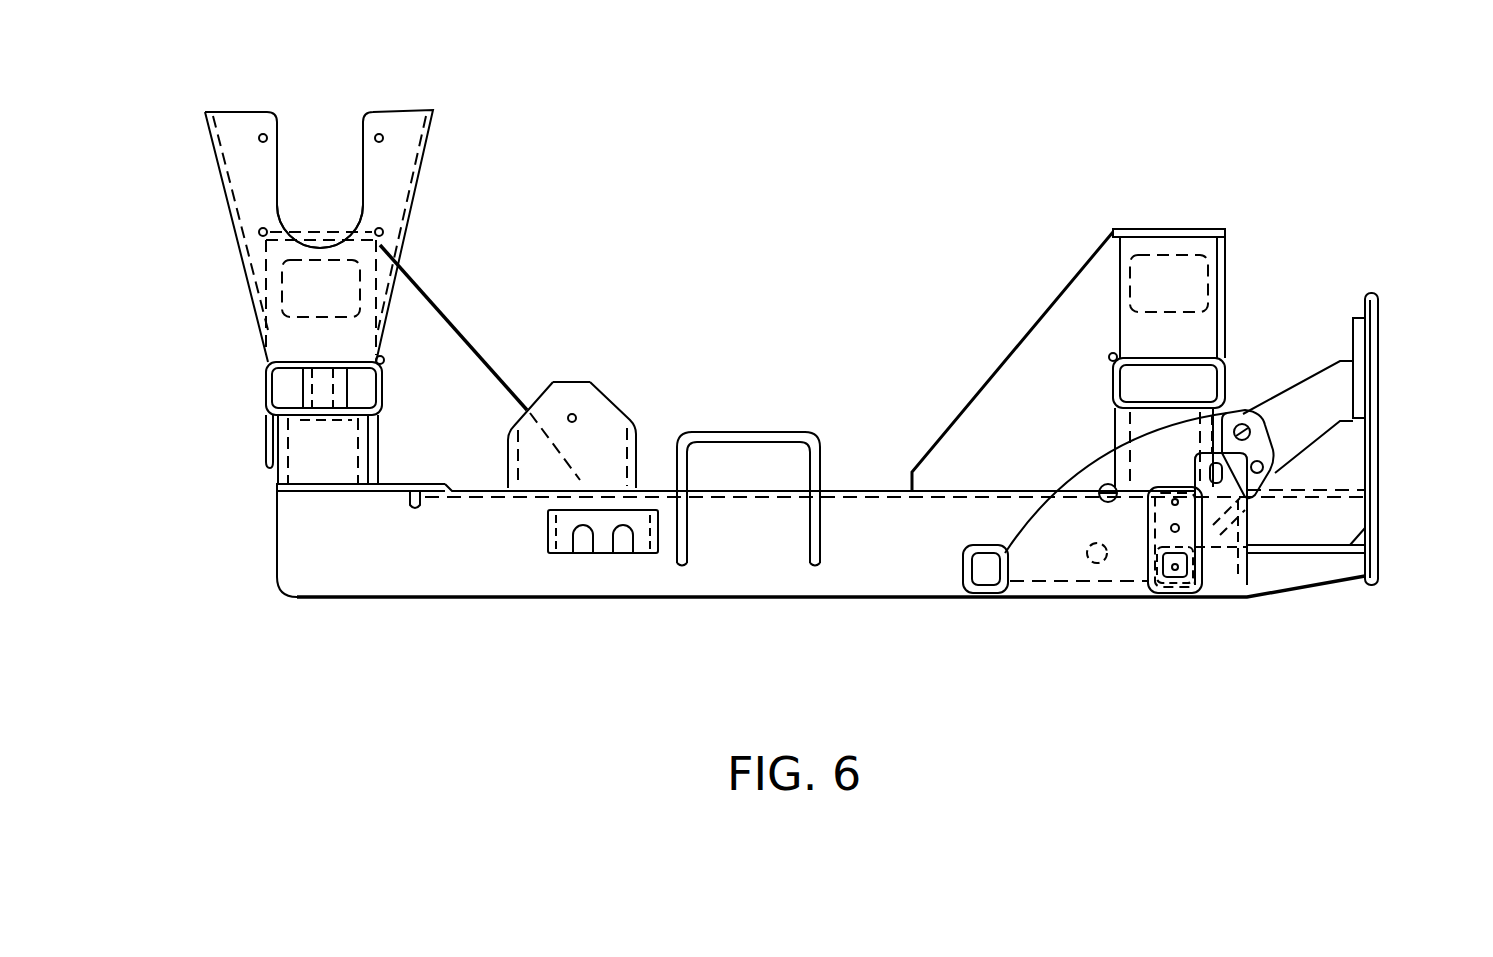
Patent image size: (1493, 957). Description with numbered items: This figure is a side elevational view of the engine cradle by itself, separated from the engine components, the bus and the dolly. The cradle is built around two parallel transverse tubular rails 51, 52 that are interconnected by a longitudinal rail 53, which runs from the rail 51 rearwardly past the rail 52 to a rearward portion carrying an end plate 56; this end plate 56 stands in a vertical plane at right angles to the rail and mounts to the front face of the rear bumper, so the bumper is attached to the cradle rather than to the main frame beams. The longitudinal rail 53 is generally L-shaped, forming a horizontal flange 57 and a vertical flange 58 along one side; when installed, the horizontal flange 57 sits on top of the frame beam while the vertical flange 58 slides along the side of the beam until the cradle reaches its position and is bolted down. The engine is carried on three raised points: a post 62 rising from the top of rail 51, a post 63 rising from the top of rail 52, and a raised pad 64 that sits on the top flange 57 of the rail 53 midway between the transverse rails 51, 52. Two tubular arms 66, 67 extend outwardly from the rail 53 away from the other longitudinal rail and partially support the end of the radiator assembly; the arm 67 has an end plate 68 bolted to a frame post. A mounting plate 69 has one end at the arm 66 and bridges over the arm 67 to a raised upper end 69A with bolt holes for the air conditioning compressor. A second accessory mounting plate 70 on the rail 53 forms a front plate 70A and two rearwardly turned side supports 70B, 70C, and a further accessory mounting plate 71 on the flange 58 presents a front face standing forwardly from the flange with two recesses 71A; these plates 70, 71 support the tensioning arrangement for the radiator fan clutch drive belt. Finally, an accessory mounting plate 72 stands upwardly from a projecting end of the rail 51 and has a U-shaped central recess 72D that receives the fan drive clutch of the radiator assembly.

The rail 51 is at (337, 355).
The rail 52 is at (1160, 350).
The longitudinal rail 53 is at (410, 590).
The end plate 56 is at (1380, 443).
The horizontal flange 57 is at (847, 483).
The vertical flange 58 is at (850, 575).
The post 62 is at (360, 228).
The post 63 is at (1157, 228).
The raised pad 64 is at (753, 432).
The tubular arm 66 is at (983, 547).
The tubular arm 67 is at (1175, 593).
The end plate 68 is at (1160, 520).
The mounting plate 69 is at (1088, 463).
The raised upper end 69A is at (1245, 408).
The second accessory mounting plate 70 is at (569, 399).
The front plate 70A is at (557, 398).
The side support 70B is at (640, 437).
The side support 70C is at (505, 455).
The accessory mounting plate 71 is at (595, 578).
The recess 71A is at (582, 550).
The accessory mounting plate 72 is at (283, 272).
The U-shaped central recess 72D is at (365, 132).